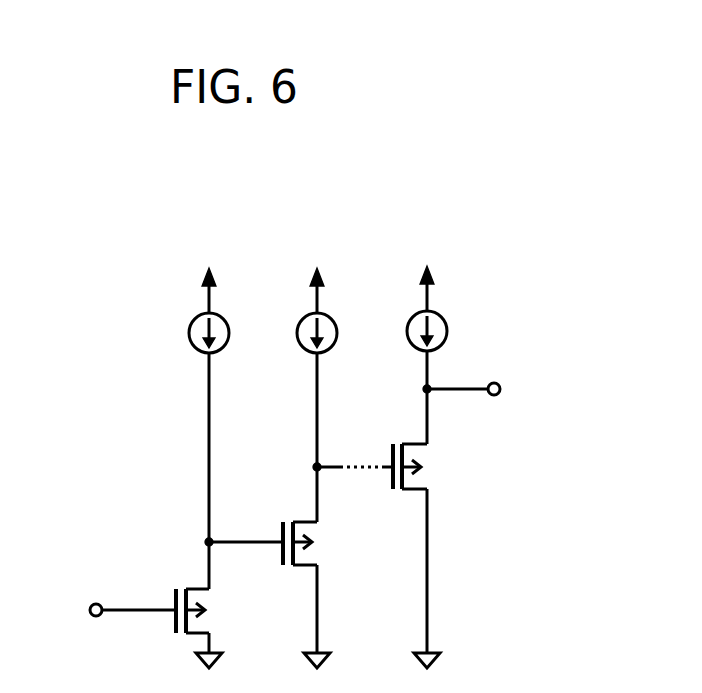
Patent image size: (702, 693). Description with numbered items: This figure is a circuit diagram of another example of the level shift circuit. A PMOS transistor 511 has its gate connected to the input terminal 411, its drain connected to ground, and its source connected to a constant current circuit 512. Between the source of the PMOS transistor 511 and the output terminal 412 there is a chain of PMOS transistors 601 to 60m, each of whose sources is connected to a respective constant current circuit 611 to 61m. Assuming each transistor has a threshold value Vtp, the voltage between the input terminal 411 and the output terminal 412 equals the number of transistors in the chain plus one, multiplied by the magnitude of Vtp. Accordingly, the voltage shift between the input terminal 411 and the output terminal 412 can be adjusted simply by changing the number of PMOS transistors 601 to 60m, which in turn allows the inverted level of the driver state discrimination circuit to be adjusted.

The constant current circuit 512 is at (188, 327).
The constant current circuit 611 is at (298, 312).
The constant current circuit 61m is at (405, 310).
The output terminal 412 is at (502, 377).
The input terminal 411 is at (96, 600).
The PMOS transistor 511 is at (208, 618).
The PMOS transistor 601 is at (318, 550).
The PMOS transistor 60m is at (428, 472).